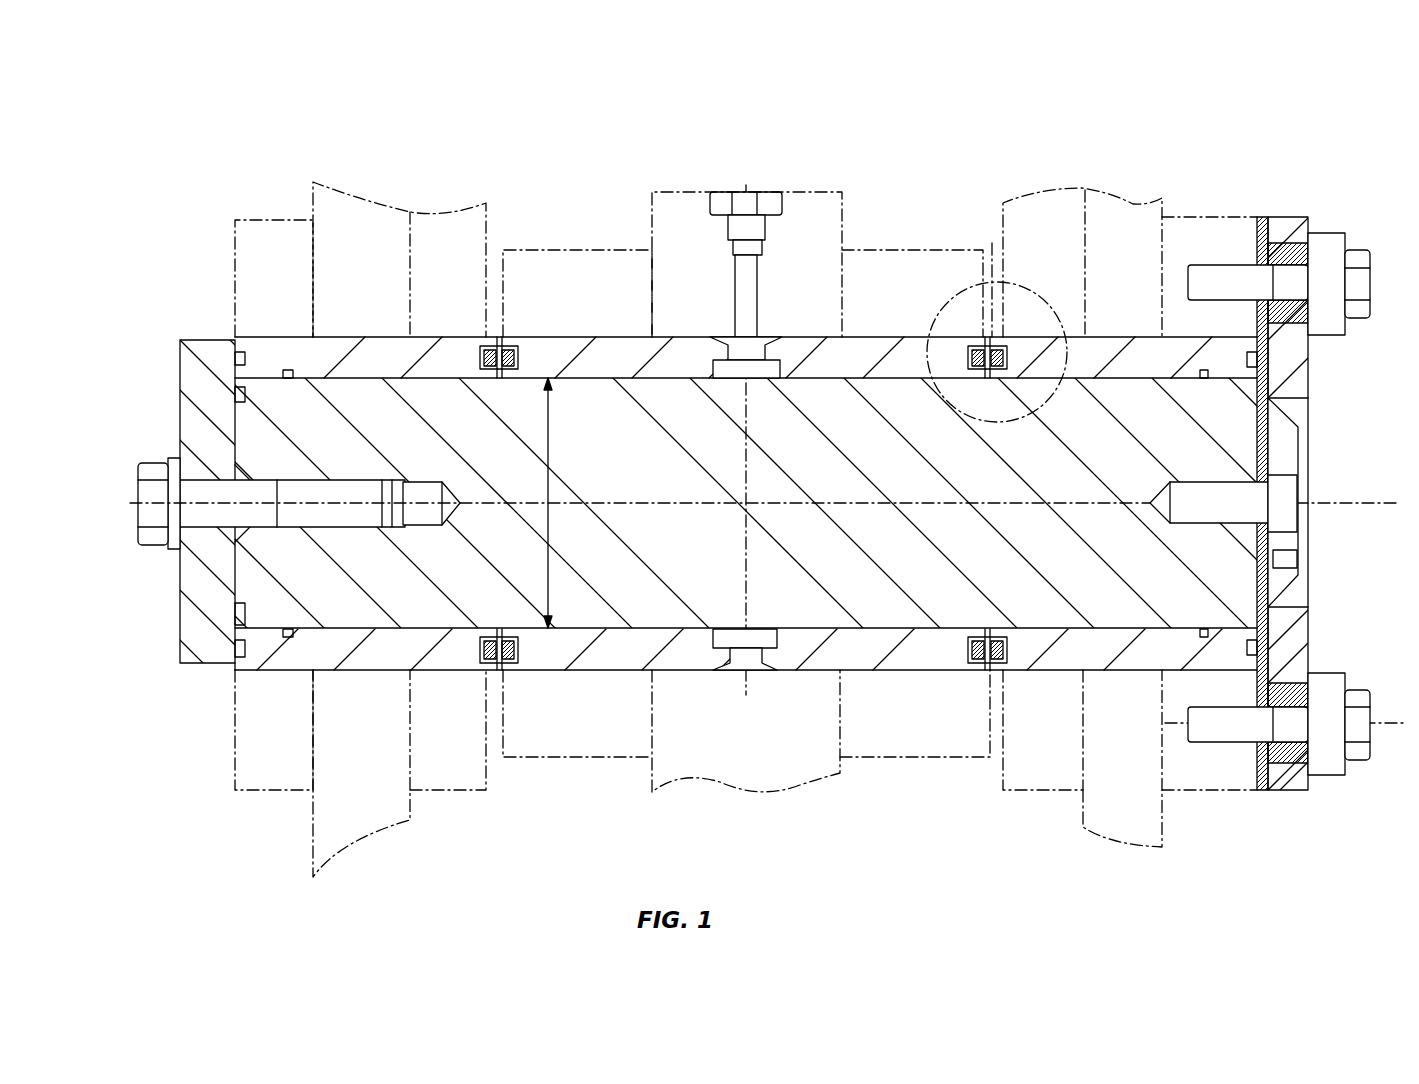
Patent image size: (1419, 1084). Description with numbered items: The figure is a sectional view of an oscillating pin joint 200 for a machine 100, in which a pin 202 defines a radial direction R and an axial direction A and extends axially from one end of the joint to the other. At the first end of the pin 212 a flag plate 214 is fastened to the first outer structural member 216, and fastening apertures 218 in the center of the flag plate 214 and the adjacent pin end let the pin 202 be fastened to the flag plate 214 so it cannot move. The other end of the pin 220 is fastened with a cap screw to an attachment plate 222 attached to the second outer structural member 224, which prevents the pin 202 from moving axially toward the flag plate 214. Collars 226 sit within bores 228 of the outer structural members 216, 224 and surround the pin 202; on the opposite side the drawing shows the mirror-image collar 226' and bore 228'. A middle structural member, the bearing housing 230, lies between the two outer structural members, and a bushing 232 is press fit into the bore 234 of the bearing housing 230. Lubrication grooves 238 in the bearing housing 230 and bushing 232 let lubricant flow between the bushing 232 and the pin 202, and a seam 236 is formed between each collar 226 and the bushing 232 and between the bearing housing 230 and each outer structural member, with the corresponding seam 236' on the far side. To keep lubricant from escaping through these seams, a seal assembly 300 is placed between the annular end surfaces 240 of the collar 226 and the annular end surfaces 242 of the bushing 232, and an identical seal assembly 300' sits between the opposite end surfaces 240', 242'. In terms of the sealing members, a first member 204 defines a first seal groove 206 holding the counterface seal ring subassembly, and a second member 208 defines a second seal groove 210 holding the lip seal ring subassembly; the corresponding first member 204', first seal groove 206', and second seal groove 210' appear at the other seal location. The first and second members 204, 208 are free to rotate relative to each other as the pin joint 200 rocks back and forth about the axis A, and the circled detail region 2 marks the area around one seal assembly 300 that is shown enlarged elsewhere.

The machine 100 is at (1276, 96).
The pin joint 200 is at (930, 152).
The pin 202 is at (669, 471).
The first member 204 is at (1079, 357).
The housing shell 204' is at (438, 318).
The first seal groove 206 is at (1048, 399).
The seal groove 206' is at (466, 395).
The second member 208 is at (642, 350).
The second seal groove 210 is at (938, 504).
The seal housing 210' is at (538, 504).
The first end of the pin 212 is at (1270, 588).
The flag plate 214 is at (1290, 635).
The first outer structural member 216 is at (1193, 233).
The fastening apertures 218 is at (1233, 515).
The other end of the pin 220 is at (232, 427).
The attachment plate 222 is at (235, 603).
The second outer structural member 224 is at (277, 240).
The collars 226 is at (1024, 509).
The sleeve 226' is at (470, 480).
The bores 228 is at (1082, 503).
The phantom component 228' is at (399, 513).
The bearing housing 230 is at (868, 263).
The bushing 232 is at (788, 348).
The bore of the bearing housing 234 is at (670, 340).
The seam 236 is at (985, 443).
The stem 236' is at (525, 434).
The lubrication grooves 238 is at (748, 291).
The annular end surfaces of the collars 240 is at (1024, 464).
The first seal ring 240' is at (465, 484).
The annular end surfaces of the bushing 242 is at (943, 475).
The second seal ring 242' is at (533, 481).
The seal assembly 300 is at (990, 443).
The seal assembly 300' is at (513, 434).
The detail region of FIG. 2 is at (977, 287).
The axial direction A is at (1315, 502).
The radial direction R is at (550, 440).